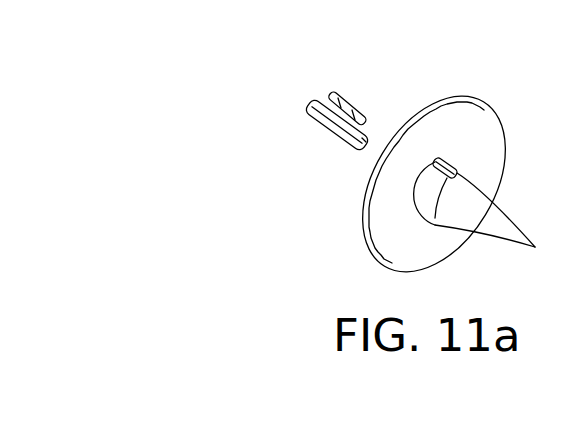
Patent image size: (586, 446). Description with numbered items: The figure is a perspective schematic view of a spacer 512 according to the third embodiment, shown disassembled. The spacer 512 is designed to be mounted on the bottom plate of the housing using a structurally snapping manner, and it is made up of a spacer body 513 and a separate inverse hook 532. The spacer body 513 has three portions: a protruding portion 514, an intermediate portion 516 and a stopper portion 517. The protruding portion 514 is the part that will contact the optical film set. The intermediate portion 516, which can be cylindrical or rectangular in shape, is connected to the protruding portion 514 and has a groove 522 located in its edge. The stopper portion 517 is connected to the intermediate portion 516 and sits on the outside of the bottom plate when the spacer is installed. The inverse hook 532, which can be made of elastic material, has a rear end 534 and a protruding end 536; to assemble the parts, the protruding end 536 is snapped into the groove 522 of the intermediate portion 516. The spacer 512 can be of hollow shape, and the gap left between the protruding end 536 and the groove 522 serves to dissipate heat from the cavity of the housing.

The spacer 512 is at (340, 58).
The spacer body 513 is at (359, 246).
The protruding portion 514 is at (503, 213).
The intermediate portion 516 is at (427, 203).
The stopper portion 517 is at (483, 124).
The groove 522 is at (452, 168).
The inverse hook 532 is at (310, 136).
The rear end 534 is at (312, 105).
The protruding end 536 is at (362, 138).